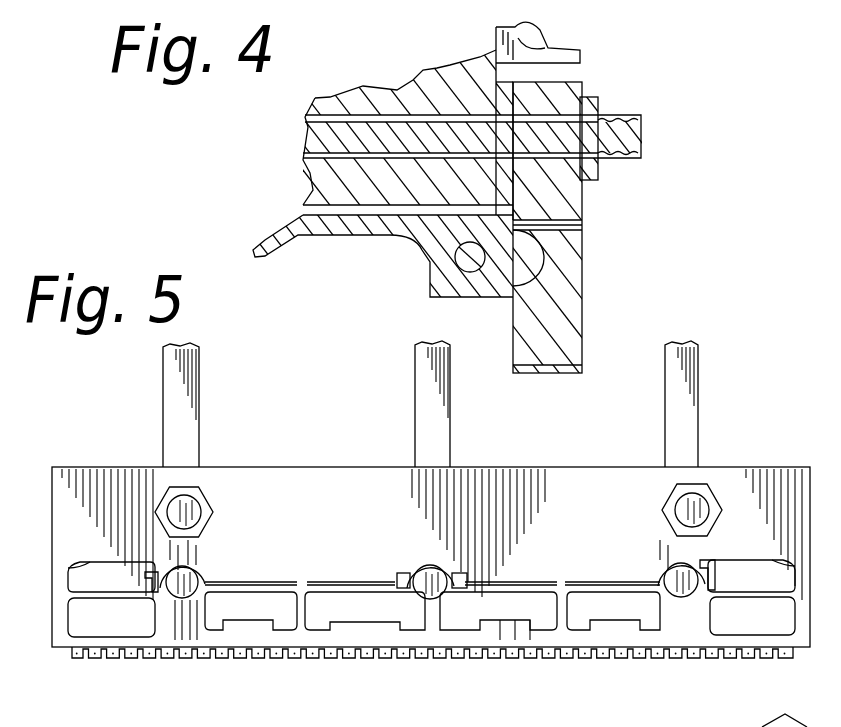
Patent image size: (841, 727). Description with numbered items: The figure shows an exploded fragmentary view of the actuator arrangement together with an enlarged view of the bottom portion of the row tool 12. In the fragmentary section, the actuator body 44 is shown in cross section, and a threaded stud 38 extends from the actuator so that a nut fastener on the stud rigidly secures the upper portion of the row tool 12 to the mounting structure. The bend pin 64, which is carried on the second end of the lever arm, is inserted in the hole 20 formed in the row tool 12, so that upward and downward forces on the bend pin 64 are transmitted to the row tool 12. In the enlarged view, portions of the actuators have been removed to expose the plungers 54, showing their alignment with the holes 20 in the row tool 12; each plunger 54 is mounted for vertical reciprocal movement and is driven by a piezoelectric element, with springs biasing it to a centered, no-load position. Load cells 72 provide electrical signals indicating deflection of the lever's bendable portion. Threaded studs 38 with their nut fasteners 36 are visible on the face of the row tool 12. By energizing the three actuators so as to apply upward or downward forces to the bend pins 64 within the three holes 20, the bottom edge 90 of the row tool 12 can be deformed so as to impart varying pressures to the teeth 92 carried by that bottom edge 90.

In FIG. 4, the row tool 12 is at (571, 193).
In FIG. 5, the row tool 12 is at (92, 467).
In FIG. 4, the hole 20 is at (575, 256).
In FIG. 5, the hole 20 is at (190, 575).
In FIG. 4, the nut 36 is at (598, 120).
In FIG. 5, the nut 36 is at (213, 520).
In FIG. 4, the threaded stud 38 is at (625, 136).
In FIG. 5, the threaded stud 38 is at (195, 510).
In FIG. 4, the body 44 is at (415, 100).
In FIG. 5, the plunger 54 is at (200, 402).
In FIG. 4, the bend pin 64 is at (535, 270).
In FIG. 5, the bend pin 64 is at (432, 581).
In FIG. 5, the load cell 72 is at (158, 582).
In FIG. 5, the bottom edge 90 is at (405, 685).
In FIG. 5, the teeth 92 is at (152, 659).